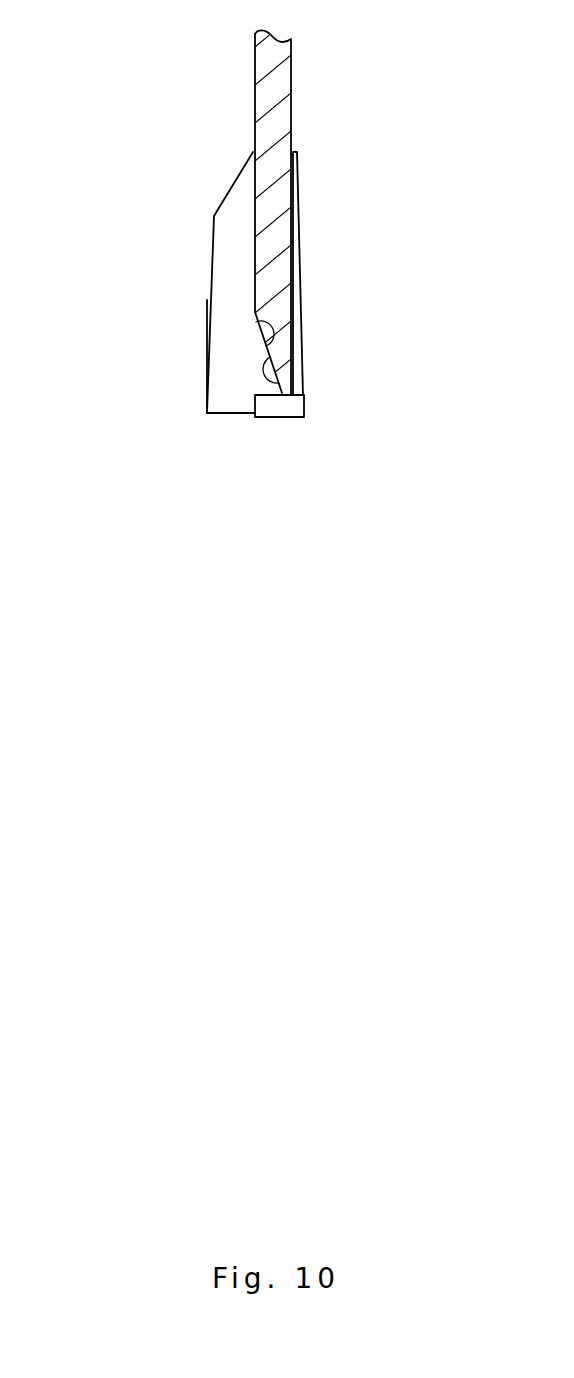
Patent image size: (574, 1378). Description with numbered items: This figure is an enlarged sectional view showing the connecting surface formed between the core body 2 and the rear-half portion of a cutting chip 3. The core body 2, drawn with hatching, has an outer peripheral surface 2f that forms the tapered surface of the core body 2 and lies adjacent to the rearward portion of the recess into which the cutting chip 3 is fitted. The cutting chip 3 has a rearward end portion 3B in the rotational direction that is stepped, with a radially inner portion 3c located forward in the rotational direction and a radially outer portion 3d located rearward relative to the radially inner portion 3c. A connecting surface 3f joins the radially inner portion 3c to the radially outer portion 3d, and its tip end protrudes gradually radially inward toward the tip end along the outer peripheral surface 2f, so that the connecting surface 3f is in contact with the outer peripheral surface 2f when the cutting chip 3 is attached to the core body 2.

The core body 2 is at (294, 66).
The outer peripheral surface 2f is at (276, 379).
The cutting chip 3 is at (212, 263).
The connecting surface 3f is at (256, 322).
The rearward end portion 3B is at (217, 379).
The radially inner portion 3c is at (225, 403).
The radially outer portion 3d is at (292, 398).